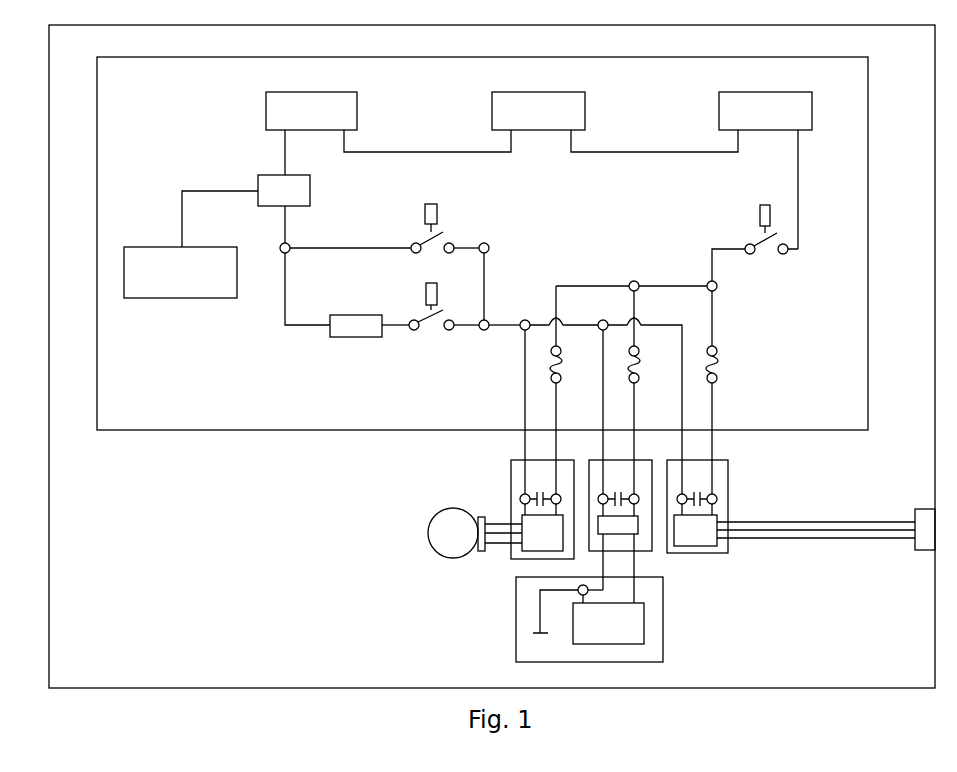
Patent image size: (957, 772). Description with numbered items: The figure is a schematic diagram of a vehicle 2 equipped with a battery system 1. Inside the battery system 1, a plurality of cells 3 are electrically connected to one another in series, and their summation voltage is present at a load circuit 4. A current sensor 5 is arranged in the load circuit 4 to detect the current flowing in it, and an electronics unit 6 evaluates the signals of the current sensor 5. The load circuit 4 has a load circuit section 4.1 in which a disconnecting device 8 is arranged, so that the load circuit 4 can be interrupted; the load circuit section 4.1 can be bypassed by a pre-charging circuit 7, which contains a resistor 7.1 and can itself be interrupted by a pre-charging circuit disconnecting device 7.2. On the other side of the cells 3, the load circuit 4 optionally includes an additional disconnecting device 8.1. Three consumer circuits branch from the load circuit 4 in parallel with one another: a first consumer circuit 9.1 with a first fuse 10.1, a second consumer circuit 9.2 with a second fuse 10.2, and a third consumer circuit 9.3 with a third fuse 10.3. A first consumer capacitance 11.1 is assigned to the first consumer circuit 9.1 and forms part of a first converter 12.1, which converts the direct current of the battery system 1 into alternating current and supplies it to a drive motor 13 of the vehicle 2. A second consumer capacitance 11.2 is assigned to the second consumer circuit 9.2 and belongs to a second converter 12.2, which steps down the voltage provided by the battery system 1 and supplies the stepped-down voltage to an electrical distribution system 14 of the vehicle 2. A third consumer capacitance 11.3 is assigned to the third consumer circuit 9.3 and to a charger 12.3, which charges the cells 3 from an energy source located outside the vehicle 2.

The battery system 1 is at (190, 434).
The vehicle 2 is at (166, 686).
The cells 3 is at (262, 102).
The load circuit 4 is at (280, 243).
The load circuit section 4.1 is at (351, 247).
The current sensor 5 is at (256, 186).
The electronics unit 6 is at (192, 302).
The pre-charging circuit 7 is at (308, 328).
The resistor 7.1 is at (361, 340).
The pre-charging circuit disconnecting device 7.2 is at (437, 330).
The disconnecting device 8 is at (446, 222).
The additional disconnecting device 8.1 is at (752, 217).
The first consumer circuit 9.1 is at (522, 407).
The second consumer circuit 9.2 is at (601, 412).
The third consumer circuit 9.3 is at (715, 403).
The first fuse 10.1 is at (545, 361).
The second fuse 10.2 is at (643, 355).
The third fuse 10.3 is at (727, 358).
The first consumer capacitance 11.1 is at (542, 490).
The second consumer capacitance 11.2 is at (620, 490).
The third consumer capacitance 11.3 is at (698, 490).
The first converter 12.1 is at (509, 482).
The relay unit 12.2 is at (650, 554).
The charger 12.3 is at (730, 490).
The drive motor 13 is at (427, 533).
The electrical distribution system 14 is at (665, 635).